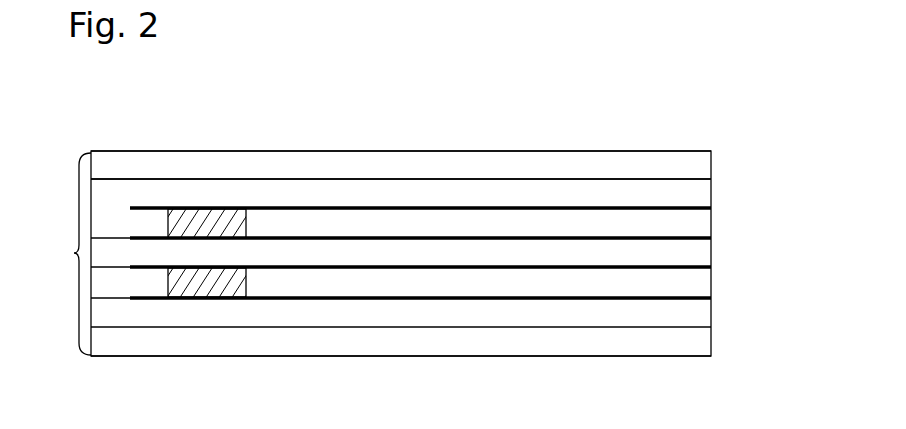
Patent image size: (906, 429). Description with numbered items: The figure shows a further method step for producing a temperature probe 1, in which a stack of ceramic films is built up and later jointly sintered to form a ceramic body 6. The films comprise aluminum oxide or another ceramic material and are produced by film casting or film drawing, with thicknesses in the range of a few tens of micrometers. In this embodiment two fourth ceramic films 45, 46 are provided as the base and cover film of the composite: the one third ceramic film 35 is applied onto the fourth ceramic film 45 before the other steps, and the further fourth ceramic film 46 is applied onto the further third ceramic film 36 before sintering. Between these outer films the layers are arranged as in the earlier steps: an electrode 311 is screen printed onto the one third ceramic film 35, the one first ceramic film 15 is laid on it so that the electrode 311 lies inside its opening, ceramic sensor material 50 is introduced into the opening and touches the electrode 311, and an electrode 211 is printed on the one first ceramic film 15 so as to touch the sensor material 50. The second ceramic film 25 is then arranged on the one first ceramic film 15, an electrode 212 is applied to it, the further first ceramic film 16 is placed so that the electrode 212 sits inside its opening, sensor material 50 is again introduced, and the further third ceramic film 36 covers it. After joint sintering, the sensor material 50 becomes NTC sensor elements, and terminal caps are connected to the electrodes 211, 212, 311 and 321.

The temperature probe 1 is at (149, 128).
The ceramic body 6 is at (66, 252).
The further fourth ceramic film 46 is at (693, 163).
The further third ceramic film 36 is at (693, 198).
The further first ceramic film 16 is at (693, 228).
The second ceramic film 25 is at (693, 257).
The one first ceramic film 15 is at (693, 280).
The one third ceramic film 35 is at (693, 310).
The fourth ceramic film 45 is at (695, 342).
The ceramic sensor material 50 is at (221, 226).
The electrode 212 is at (403, 237).
The electrode 321 is at (537, 208).
The electrode 311 is at (517, 298).
The electrode 211 is at (625, 268).